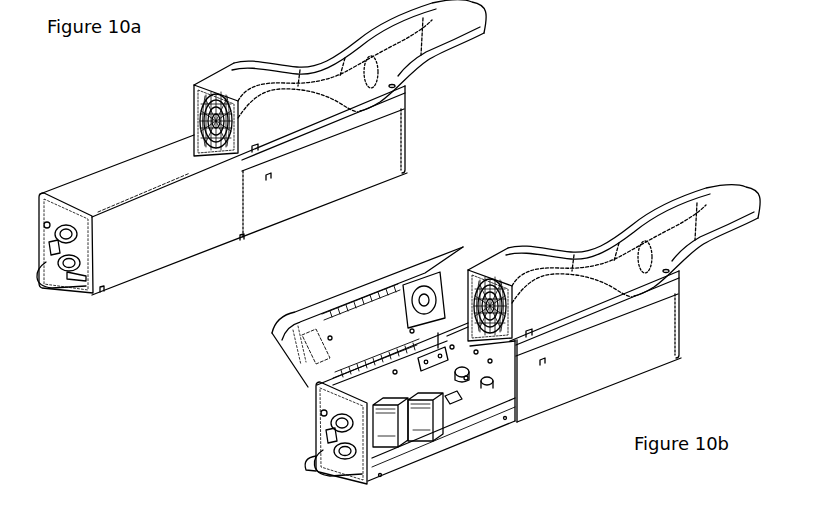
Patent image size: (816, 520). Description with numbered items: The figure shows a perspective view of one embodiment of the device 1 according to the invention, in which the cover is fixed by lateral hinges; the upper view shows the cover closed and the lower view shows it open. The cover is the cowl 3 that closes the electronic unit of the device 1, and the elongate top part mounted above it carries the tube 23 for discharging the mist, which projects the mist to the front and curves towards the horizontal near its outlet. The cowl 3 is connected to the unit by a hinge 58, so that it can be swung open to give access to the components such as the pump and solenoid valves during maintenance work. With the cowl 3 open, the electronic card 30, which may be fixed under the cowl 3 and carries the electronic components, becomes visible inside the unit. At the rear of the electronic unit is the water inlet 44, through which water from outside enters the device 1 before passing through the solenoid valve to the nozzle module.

In FIG. 10A, the device 1 is at (452, 140).
In FIG. 10B, the device 1 is at (514, 205).
In FIG. 10A, the cowl 3 is at (167, 159).
In FIG. 10A, the tube for discharging the mist 23 is at (453, 50).
In FIG. 10B, the electronic card 30 is at (320, 372).
In FIG. 10B, the water inlet 44 is at (347, 463).
In FIG. 10B, the hinge 58 is at (443, 336).